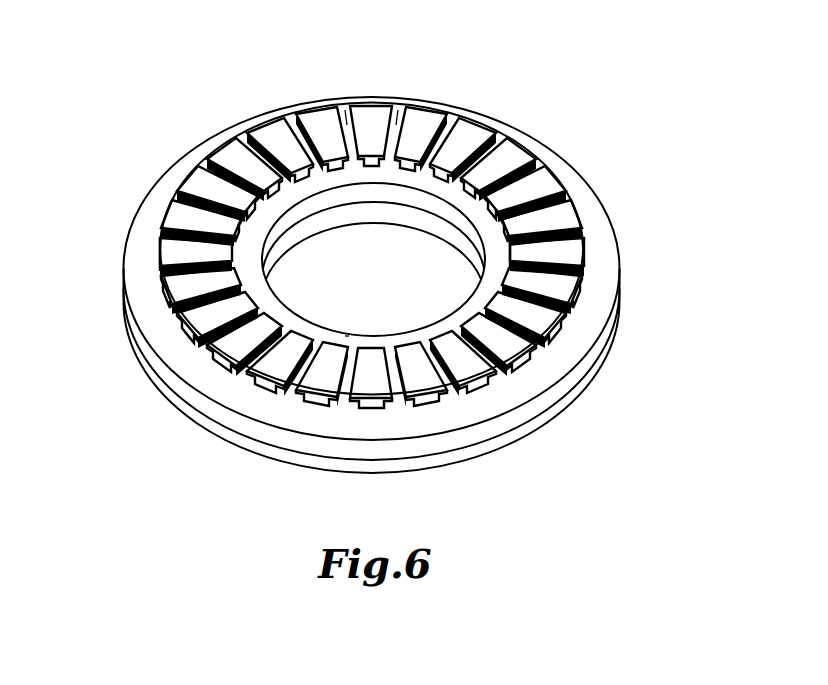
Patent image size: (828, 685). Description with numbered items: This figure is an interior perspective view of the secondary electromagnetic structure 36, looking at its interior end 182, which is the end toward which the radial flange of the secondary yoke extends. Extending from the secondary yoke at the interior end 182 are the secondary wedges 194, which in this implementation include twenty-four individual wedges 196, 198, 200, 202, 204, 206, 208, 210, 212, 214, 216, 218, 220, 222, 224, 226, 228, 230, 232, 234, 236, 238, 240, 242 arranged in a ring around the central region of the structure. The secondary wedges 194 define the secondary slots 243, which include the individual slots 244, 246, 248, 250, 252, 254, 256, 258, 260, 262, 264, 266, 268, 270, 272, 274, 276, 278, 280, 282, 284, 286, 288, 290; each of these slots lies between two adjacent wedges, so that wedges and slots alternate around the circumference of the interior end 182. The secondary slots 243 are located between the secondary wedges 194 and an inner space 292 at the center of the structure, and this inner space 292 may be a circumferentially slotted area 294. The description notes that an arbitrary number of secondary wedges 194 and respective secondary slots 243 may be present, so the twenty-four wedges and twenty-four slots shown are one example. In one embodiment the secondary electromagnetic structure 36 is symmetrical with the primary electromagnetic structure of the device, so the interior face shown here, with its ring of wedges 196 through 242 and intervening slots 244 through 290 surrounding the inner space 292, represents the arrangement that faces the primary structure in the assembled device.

The secondary electromagnetic structure 36 is at (191, 101).
The interior end 182 is at (537, 142).
The secondary wedges 194 is at (348, 335).
The inner space 292 is at (447, 218).
The circumferentially slotted area 294 is at (423, 176).
The secondary slots 243 is at (488, 315).
The wedge 196 is at (372, 375).
The wedge 198 is at (418, 371).
The wedge 200 is at (460, 358).
The wedge 202 is at (497, 339).
The wedge 204 is at (526, 313).
The wedge 206 is at (543, 284).
The wedge 208 is at (550, 252).
The wedge 210 is at (543, 220).
The wedge 212 is at (526, 191).
The wedge 214 is at (497, 165).
The wedge 216 is at (460, 146).
The wedge 218 is at (418, 133).
The wedge 220 is at (372, 129).
The wedge 222 is at (325, 133).
The wedge 224 is at (282, 146).
The wedge 226 is at (246, 165).
The wedge 228 is at (217, 191).
The wedge 230 is at (200, 220).
The wedge 232 is at (194, 252).
The wedge 234 is at (200, 284).
The wedge 236 is at (217, 313).
The wedge 238 is at (246, 339).
The wedge 240 is at (283, 358).
The wedge 242 is at (325, 371).
The slot 244 is at (396, 379).
The slot 246 is at (442, 370).
The slot 248 is at (484, 353).
The slot 250 is at (518, 330).
The slot 252 is at (542, 301).
The slot 254 is at (555, 269).
The slot 256 is at (555, 235).
The slot 258 is at (542, 203).
The slot 260 is at (518, 174).
The slot 262 is at (484, 151).
The slot 264 is at (442, 134).
The slot 266 is at (396, 125).
The slot 268 is at (347, 125).
The slot 270 is at (301, 134).
The slot 272 is at (259, 151).
The slot 274 is at (225, 174).
The slot 276 is at (201, 203).
The slot 278 is at (188, 235).
The slot 280 is at (188, 269).
The slot 282 is at (201, 301).
The slot 284 is at (225, 330).
The slot 286 is at (259, 353).
The slot 288 is at (301, 370).
The slot 290 is at (347, 379).